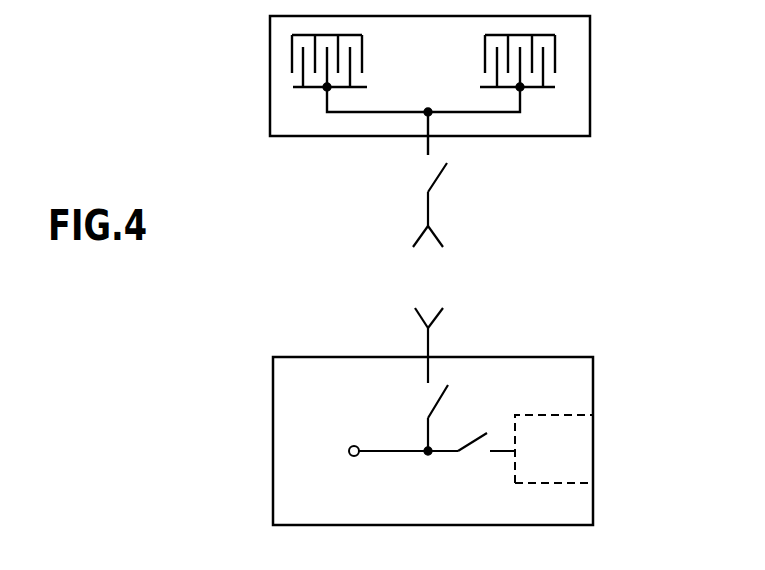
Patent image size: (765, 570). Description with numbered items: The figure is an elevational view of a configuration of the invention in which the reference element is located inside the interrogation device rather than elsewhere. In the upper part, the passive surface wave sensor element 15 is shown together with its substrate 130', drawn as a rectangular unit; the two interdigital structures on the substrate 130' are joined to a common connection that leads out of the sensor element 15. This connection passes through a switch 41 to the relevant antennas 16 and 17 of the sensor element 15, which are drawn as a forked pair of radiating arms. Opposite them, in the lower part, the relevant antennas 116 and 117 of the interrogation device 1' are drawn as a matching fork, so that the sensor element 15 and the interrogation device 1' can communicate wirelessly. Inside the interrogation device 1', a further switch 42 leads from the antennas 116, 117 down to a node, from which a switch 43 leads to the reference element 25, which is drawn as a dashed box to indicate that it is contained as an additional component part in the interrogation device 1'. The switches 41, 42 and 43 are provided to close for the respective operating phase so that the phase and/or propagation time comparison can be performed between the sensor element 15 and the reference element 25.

The passive surface wave sensor element 15 is at (602, 63).
The substrate 130' is at (481, 95).
The switch 41 is at (422, 192).
The antenna of the sensor element 16 is at (422, 232).
The antenna of the sensor element 17 is at (445, 232).
The antenna of the interrogation device 116 is at (422, 321).
The antenna of the interrogation device 117 is at (443, 320).
The interrogation device 1' is at (481, 426).
The switch 42 is at (420, 420).
The switch 43 is at (513, 457).
The reference element 25 is at (554, 449).